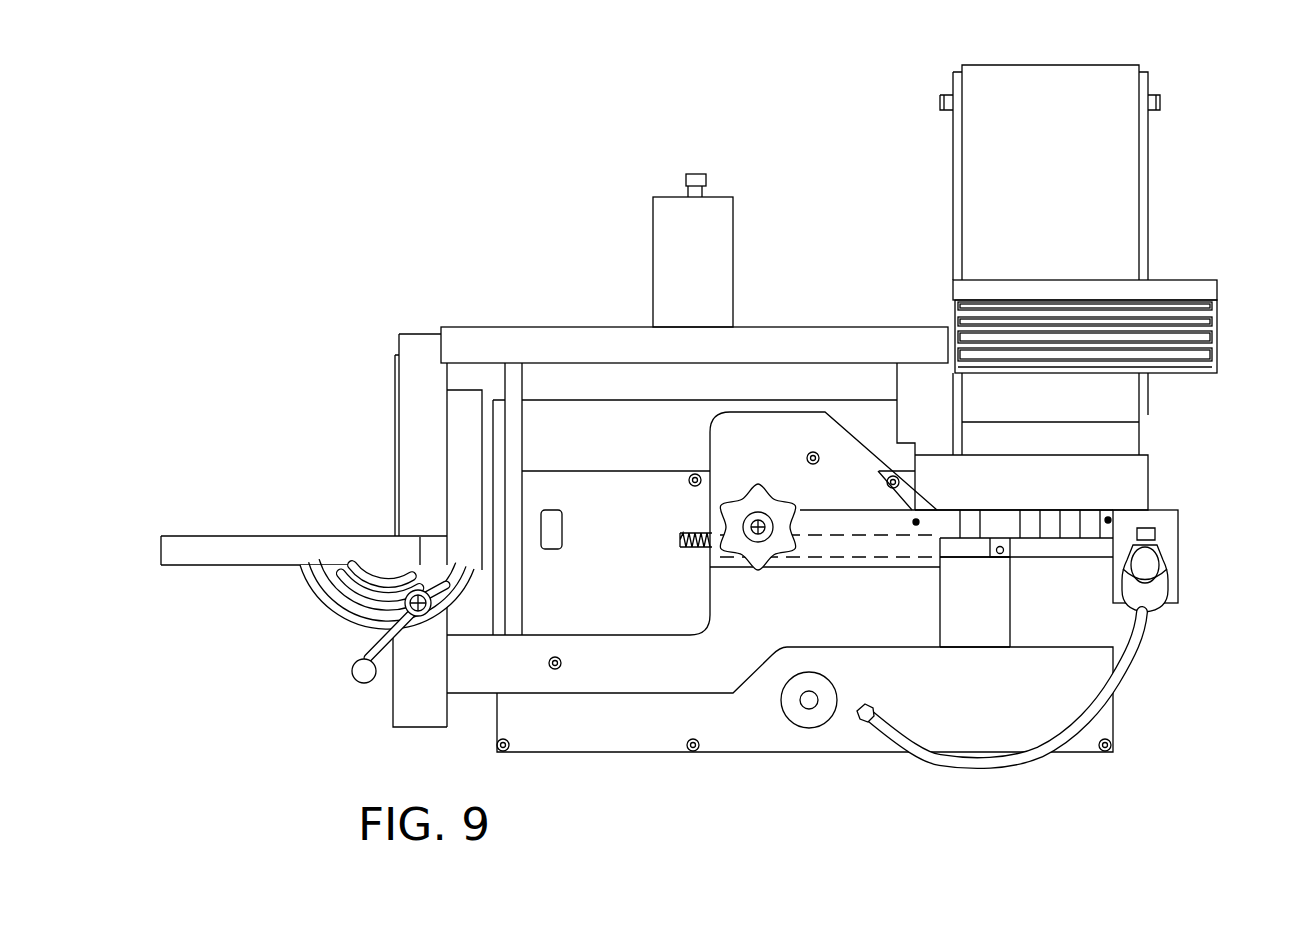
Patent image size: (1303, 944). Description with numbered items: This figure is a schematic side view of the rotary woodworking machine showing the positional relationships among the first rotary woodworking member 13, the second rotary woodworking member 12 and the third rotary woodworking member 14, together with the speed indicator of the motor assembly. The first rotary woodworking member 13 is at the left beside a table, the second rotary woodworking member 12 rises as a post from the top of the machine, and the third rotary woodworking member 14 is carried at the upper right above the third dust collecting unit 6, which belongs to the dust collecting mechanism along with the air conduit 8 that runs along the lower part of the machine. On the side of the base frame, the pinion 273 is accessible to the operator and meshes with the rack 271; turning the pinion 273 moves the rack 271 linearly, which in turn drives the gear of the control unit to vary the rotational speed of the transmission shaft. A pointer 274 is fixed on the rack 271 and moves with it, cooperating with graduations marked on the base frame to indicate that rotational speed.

The third dust collecting unit 6 is at (1148, 487).
The air conduit 8 is at (995, 650).
The second rotary woodworking member 12 is at (672, 229).
The first rotary woodworking member 13 is at (395, 438).
The third rotary woodworking member 14 is at (1108, 218).
The rack 271 is at (692, 550).
The pinion 273 is at (760, 490).
The pointer 274 is at (1000, 546).